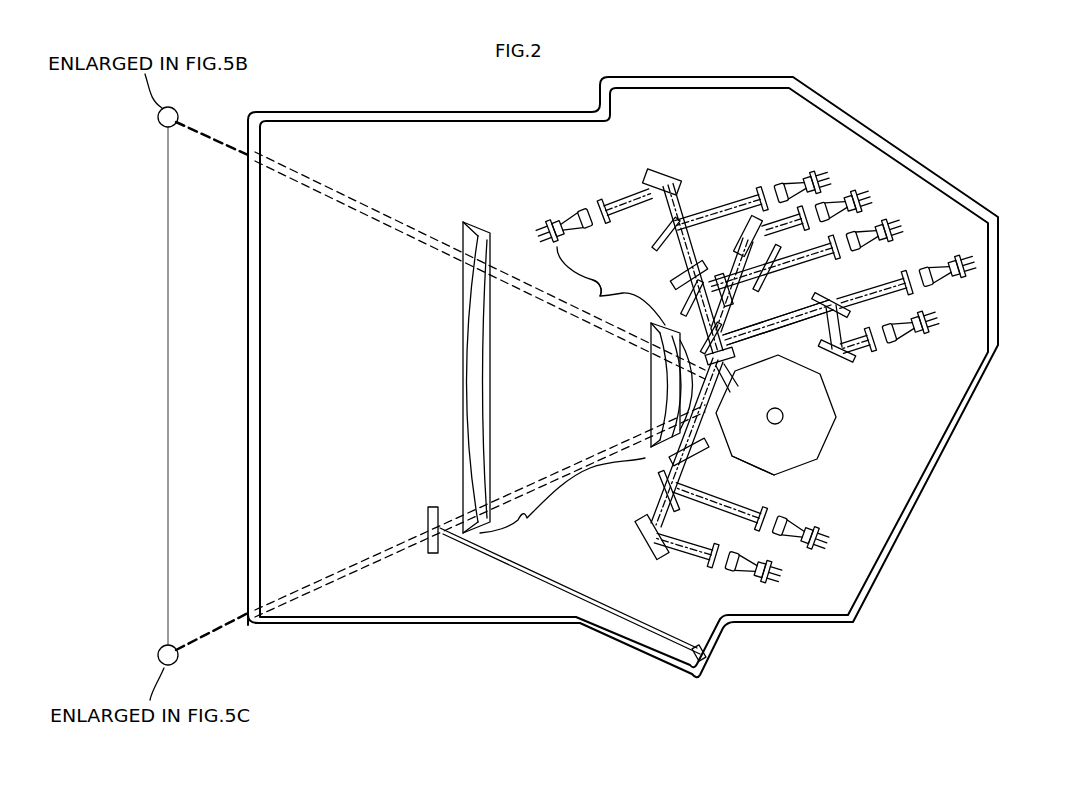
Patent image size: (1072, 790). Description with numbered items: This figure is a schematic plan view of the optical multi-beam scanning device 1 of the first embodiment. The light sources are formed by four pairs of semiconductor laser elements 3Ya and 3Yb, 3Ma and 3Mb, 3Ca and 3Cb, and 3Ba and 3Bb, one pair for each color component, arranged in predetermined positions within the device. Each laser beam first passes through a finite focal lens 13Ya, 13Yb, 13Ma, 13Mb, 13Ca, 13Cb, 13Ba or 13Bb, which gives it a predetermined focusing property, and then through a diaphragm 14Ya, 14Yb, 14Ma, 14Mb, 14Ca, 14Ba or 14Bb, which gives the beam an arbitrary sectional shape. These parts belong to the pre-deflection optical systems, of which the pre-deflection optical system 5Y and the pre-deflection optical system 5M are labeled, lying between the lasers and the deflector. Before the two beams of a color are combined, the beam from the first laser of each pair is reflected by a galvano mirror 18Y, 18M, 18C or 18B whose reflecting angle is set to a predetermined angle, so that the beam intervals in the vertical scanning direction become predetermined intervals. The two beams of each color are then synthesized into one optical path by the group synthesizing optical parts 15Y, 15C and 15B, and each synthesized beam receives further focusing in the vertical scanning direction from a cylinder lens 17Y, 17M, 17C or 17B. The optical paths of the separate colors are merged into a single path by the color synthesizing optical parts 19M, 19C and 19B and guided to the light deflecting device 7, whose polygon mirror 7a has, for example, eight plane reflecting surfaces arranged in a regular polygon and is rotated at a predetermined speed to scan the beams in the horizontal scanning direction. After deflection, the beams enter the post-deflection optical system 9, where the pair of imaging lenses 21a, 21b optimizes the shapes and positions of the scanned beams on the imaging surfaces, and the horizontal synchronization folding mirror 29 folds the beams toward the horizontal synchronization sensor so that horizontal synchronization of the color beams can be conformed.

The optical multi-beam scanning device 1 is at (863, 553).
The semiconductor laser element 3Ya is at (552, 216).
The semiconductor laser element 3Yb is at (812, 175).
The semiconductor laser element 3Ma is at (860, 200).
The semiconductor laser element 3Mb is at (892, 236).
The semiconductor laser element 3Ca is at (930, 325).
The semiconductor laser element 3Cb is at (962, 280).
The semiconductor laser element 3Ba is at (778, 570).
The semiconductor laser element 3Bb is at (816, 525).
The finite focal lens 13Ya is at (585, 208).
The finite focal lens 13Yb is at (782, 185).
The finite focal lens 13Ma is at (823, 206).
The finite focal lens 13Mb is at (855, 236).
The finite focal lens 13Ca is at (893, 340).
The finite focal lens 13Cb is at (925, 274).
The finite focal lens 13Ba is at (733, 570).
The finite focal lens 13Bb is at (782, 518).
The diaphragm 14Ya is at (610, 220).
The diaphragm 14Yb is at (762, 188).
The diaphragm 14Ma is at (808, 208).
The diaphragm 14Mb is at (838, 242).
The diaphragm 14Ca is at (902, 282).
The diaphragm 14Ba is at (706, 557).
The diaphragm 14Bb is at (752, 512).
The group synthesizing optical part 15Y is at (658, 242).
The group synthesizing optical part 15B is at (662, 492).
The group synthesizing optical part 15C is at (840, 302).
The cylinder lens 17Y is at (672, 278).
The cylinder lens 17M is at (745, 262).
The cylinder lens 17C is at (825, 315).
The cylinder lens 17B is at (672, 457).
The galvano mirror 18Y is at (668, 159).
The galvano mirror 18M is at (744, 222).
The galvano mirror 18C is at (840, 360).
The galvano mirror 18B is at (640, 528).
The color synthesizing optical part 19M is at (686, 300).
The color synthesizing optical part 19C is at (733, 295).
The color synthesizing optical part 19B is at (735, 360).
The pre-deflection optical system 5Y is at (600, 296).
The pre-deflection optical system 5M is at (768, 292).
The light deflecting device 7 is at (834, 414).
The polygon mirror 7a is at (803, 466).
The imaging lens 21a is at (645, 385).
The imaging lens 21b is at (462, 383).
The horizontal synchronization folding mirror 29 is at (434, 555).
The post-deflection optical system 9 is at (738, 628).